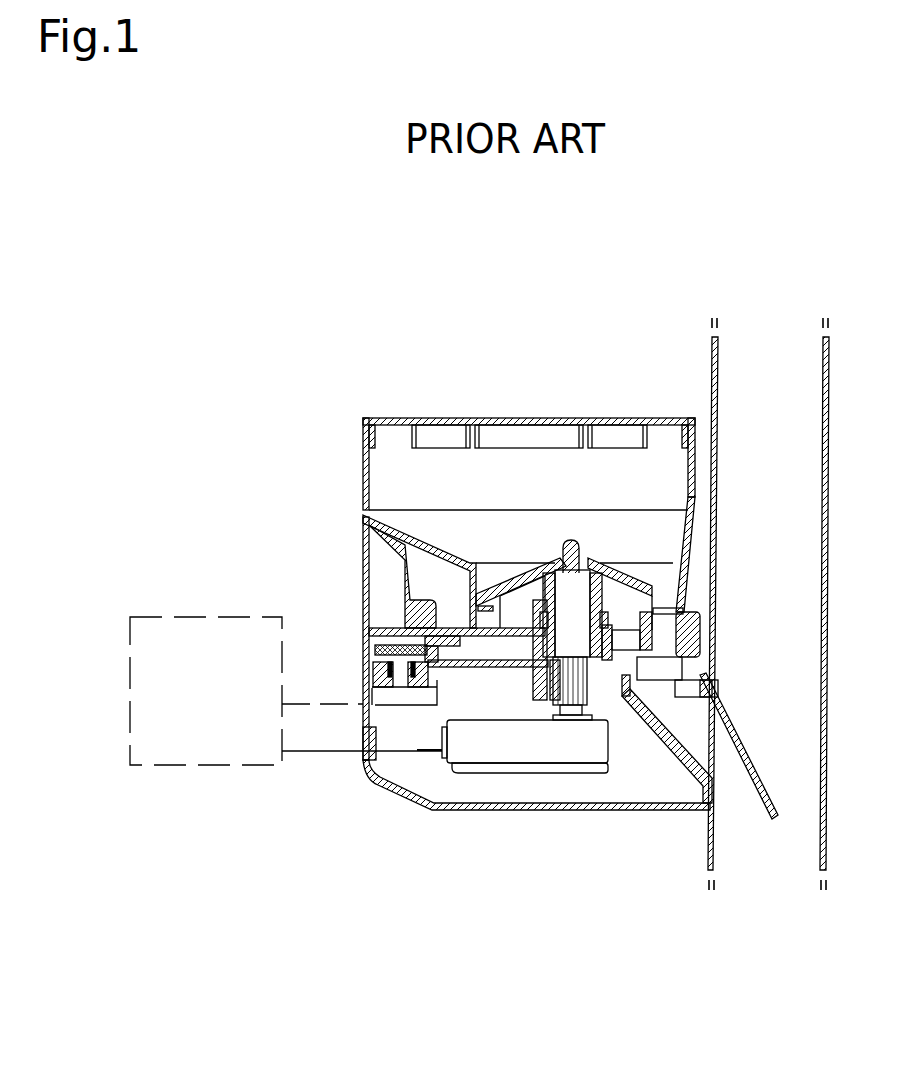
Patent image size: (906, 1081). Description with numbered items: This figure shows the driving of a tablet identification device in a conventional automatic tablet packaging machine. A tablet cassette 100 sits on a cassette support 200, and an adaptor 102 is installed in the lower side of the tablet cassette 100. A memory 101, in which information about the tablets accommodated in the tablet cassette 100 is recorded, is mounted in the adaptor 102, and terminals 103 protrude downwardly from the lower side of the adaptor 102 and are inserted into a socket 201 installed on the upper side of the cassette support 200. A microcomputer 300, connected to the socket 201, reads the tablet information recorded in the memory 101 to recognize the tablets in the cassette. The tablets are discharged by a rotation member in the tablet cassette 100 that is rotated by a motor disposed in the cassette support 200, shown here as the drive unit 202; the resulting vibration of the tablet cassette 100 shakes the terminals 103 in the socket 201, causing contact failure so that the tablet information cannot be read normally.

The tablet cassette 100 is at (363, 462).
The memory 101 is at (400, 650).
The adaptor 102 is at (375, 640).
The terminals 103 is at (368, 658).
The cassette support 200 is at (493, 803).
The socket 201 is at (428, 690).
The fan motor 202 is at (567, 752).
The microcomputer 300 is at (200, 738).